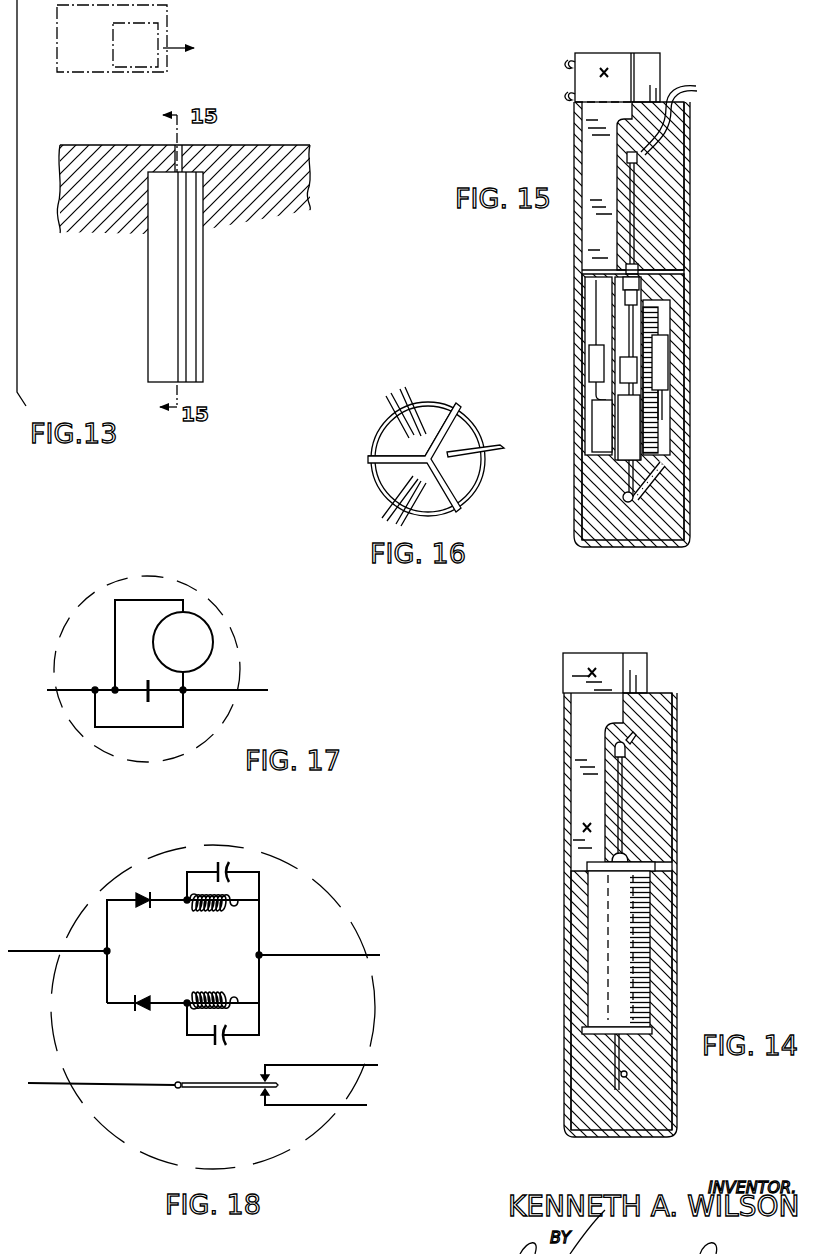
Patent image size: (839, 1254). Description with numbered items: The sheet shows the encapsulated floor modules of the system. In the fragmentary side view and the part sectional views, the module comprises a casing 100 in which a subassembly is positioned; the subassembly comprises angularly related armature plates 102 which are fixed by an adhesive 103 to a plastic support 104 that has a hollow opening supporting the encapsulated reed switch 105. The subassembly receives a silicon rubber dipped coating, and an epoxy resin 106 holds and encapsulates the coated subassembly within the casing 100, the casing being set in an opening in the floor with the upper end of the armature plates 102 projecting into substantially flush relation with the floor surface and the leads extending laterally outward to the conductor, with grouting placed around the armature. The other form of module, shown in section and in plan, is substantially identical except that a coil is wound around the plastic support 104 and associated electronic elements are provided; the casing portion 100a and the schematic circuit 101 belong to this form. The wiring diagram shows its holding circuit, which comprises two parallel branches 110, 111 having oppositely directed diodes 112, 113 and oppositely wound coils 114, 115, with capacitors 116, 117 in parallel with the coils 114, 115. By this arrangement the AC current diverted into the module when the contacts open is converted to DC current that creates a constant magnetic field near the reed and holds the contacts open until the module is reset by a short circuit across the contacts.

In FIG. 13, the casing 100 is at (208, 272).
In FIG. 15, the casing 100 is at (692, 291).
In FIG. 16, the casing 100 is at (373, 486).
In FIG. 15, the housing component 100a is at (690, 366).
In FIG. 17, the circuit 101 is at (233, 641).
In FIG. 18, the circuit 101 is at (83, 906).
In FIG. 15, the armature plates 102 is at (575, 74).
In FIG. 16, the armature plates 102 is at (377, 437).
In FIG. 15, the adhesive 103 is at (646, 273).
In FIG. 15, the plastic support 104 is at (655, 438).
In FIG. 15, the encapsulated reed switch 105 is at (667, 464).
In FIG. 15, the epoxy resin 106 is at (675, 326).
In FIG. 18, the parallel branch 110 is at (172, 897).
In FIG. 18, the parallel branch 111 is at (163, 1007).
In FIG. 18, the diode 112 is at (140, 893).
In FIG. 18, the diode 113 is at (138, 1012).
In FIG. 18, the coil 114 is at (256, 902).
In FIG. 18, the coil 115 is at (261, 994).
In FIG. 18, the capacitor 116 is at (232, 868).
In FIG. 18, the capacitor 117 is at (236, 1044).